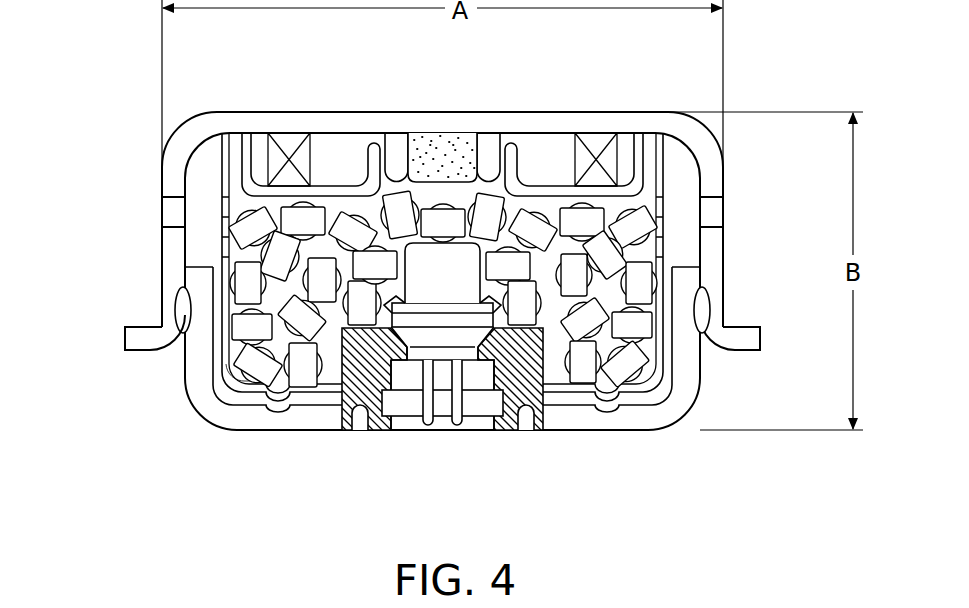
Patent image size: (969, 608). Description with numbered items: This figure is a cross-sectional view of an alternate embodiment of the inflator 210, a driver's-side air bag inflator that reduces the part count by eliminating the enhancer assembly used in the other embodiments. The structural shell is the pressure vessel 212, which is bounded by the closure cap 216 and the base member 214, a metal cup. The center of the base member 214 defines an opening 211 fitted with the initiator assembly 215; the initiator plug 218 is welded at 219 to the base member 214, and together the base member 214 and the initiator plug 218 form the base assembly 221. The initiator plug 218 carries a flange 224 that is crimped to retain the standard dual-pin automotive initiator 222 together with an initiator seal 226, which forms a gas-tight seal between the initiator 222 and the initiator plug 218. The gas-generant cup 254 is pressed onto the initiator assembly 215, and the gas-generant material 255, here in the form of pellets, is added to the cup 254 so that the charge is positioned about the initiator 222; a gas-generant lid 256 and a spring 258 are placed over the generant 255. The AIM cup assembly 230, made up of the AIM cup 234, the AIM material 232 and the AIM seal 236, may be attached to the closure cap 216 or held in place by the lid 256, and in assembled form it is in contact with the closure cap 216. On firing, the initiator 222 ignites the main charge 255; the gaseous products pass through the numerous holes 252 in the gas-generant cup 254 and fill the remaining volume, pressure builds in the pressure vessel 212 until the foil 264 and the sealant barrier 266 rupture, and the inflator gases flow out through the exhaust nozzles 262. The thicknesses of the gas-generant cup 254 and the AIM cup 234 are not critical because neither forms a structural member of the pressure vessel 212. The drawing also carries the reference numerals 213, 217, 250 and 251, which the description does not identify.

The inflator 210 is at (398, 91).
The opening 211 is at (369, 431).
The pressure vessel 212 is at (733, 263).
The sealing bead 213 is at (706, 334).
The base member 214 is at (607, 433).
The initiator assembly 215 is at (445, 441).
The closure cap 216 is at (727, 233).
The terminal foot 217 is at (765, 338).
The initiator plug 218 is at (378, 422).
The weld 219 is at (531, 432).
The base assembly 221 is at (516, 439).
The initiator 222 is at (437, 334).
The flange 224 is at (488, 303).
The initiator seal 226 is at (490, 340).
The AIM cup assembly 230 is at (452, 133).
The AIM material 232 is at (466, 158).
The AIM cup 234 is at (406, 149).
The AIM seal 236 is at (481, 199).
The inner container 250 is at (212, 370).
The container right wall 251 is at (668, 362).
The holes 252 is at (663, 204).
The gas-generant cup 254 is at (223, 352).
The gas-generant material 255 is at (247, 382).
The gas-generant lid 256 is at (604, 185).
The spring 258 is at (267, 155).
The exhaust nozzles 262 is at (172, 208).
The foil 264 is at (193, 207).
The sealant barrier 266 is at (167, 220).